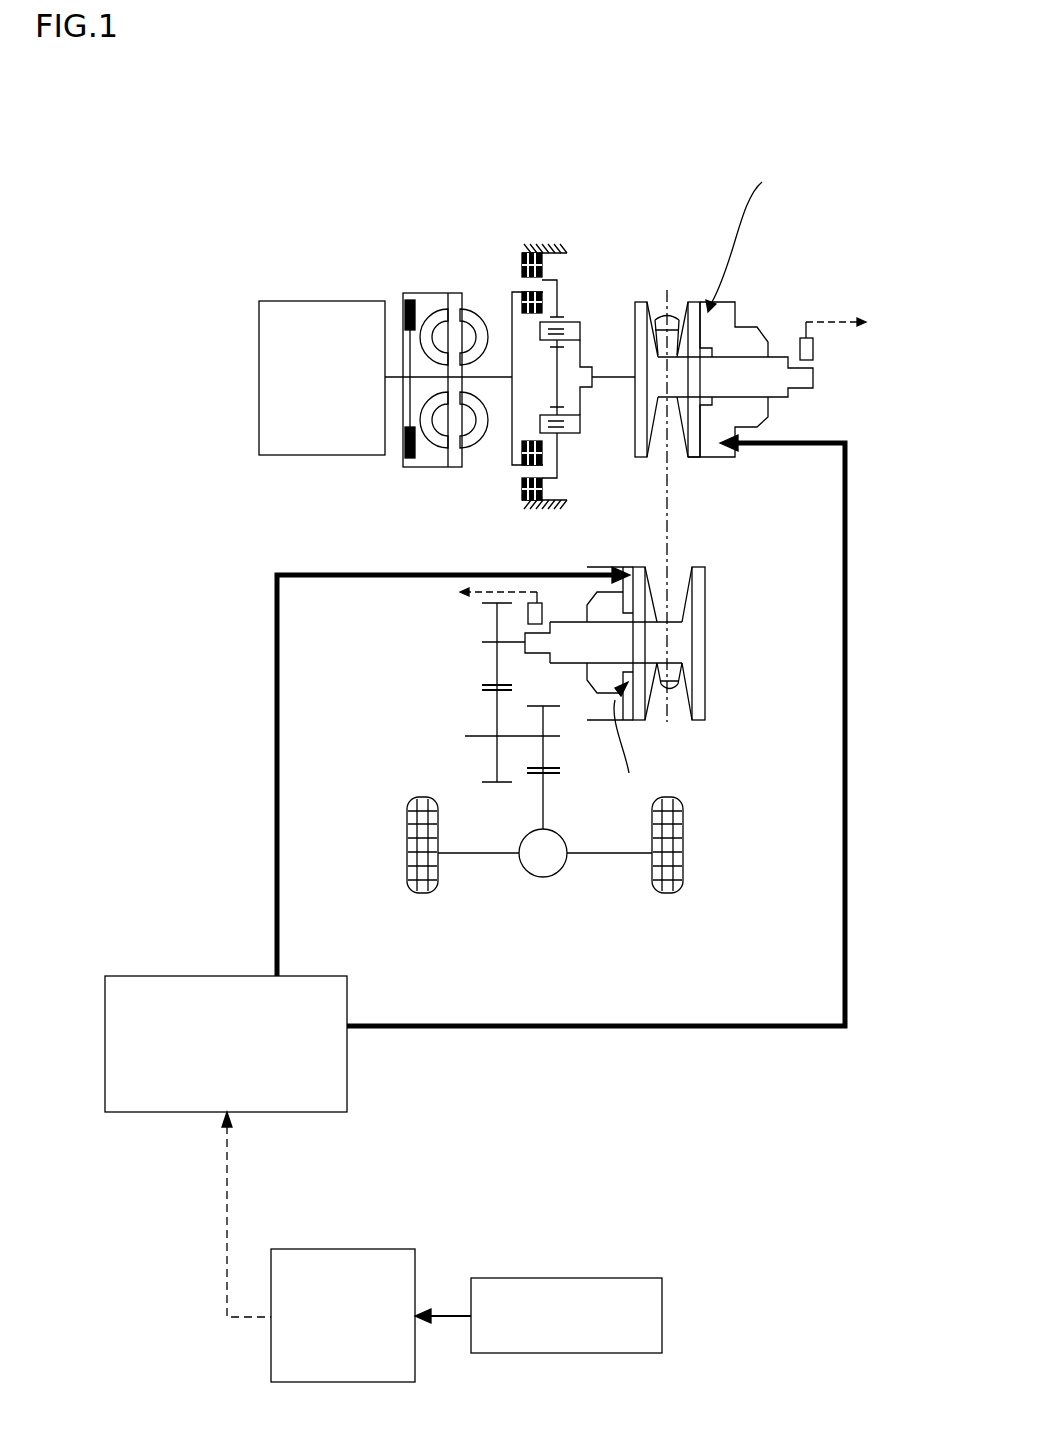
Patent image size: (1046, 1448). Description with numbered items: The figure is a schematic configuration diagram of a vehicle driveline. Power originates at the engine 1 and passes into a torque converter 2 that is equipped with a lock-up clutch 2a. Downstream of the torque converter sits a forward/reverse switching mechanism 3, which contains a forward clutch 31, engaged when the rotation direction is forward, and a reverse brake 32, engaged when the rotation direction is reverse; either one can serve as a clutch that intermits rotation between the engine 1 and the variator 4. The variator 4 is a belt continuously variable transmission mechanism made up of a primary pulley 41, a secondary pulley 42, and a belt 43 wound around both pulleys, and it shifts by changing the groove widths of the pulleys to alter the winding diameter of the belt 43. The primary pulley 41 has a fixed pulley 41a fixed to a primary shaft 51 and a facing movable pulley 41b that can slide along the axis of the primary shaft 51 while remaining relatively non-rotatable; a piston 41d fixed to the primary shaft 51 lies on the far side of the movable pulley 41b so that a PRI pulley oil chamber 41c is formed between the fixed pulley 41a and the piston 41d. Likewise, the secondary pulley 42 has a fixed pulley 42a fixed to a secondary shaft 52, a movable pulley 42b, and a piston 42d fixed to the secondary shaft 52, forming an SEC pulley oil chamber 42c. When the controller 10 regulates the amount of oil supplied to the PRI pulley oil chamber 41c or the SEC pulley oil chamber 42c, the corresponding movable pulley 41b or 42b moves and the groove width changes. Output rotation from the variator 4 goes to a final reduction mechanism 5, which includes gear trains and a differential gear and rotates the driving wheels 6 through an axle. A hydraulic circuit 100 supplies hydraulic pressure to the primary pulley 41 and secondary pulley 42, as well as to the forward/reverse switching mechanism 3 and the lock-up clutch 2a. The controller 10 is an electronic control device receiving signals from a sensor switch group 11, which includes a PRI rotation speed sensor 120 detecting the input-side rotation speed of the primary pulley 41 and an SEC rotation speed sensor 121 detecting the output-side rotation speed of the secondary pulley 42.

The engine 1 is at (309, 301).
The torque converter 2 is at (450, 268).
The lock-up clutch 2a is at (408, 296).
The forward/reverse switching mechanism 3 is at (533, 329).
The forward clutch 31 is at (520, 292).
The reverse brake 32 is at (545, 250).
The variator 4 is at (665, 226).
The primary pulley 41 is at (730, 308).
The fixed pulley 41a is at (640, 301).
The movable pulley 41b is at (690, 301).
The PRI pulley oil chamber 41c is at (740, 338).
The piston 41d is at (768, 334).
The secondary pulley 42 is at (668, 660).
The fixed pulley 42a is at (705, 580).
The movable pulley 42b is at (640, 566).
The SEC pulley oil chamber 42c is at (606, 610).
The piston 42d is at (600, 690).
The belt 43 is at (690, 690).
The final reduction mechanism 5 is at (469, 716).
The primary shaft 51 is at (610, 380).
The secondary shaft 52 is at (487, 642).
The driving wheels 6 is at (405, 862).
The controller 10 is at (358, 1249).
The sensor switch group 11 is at (660, 1285).
The hydraulic circuit 100 is at (224, 976).
The PRI rotation speed sensor 120 is at (815, 350).
The SEC rotation speed sensor 121 is at (540, 603).